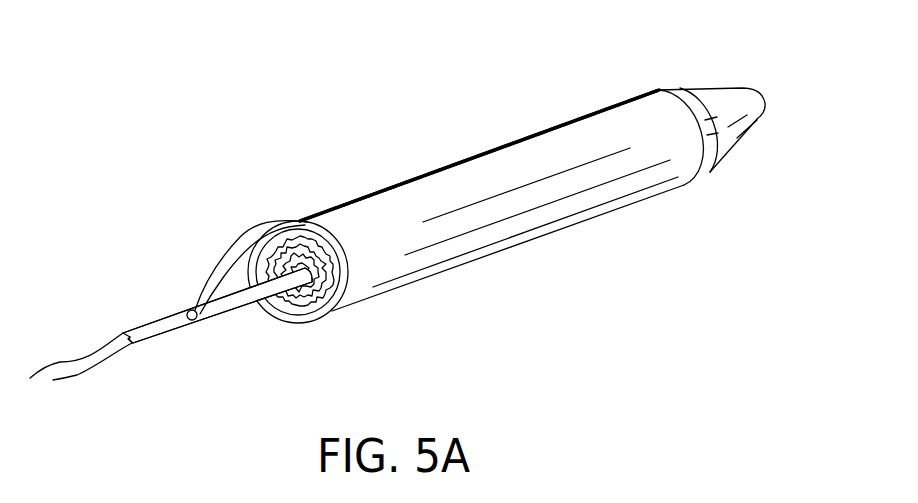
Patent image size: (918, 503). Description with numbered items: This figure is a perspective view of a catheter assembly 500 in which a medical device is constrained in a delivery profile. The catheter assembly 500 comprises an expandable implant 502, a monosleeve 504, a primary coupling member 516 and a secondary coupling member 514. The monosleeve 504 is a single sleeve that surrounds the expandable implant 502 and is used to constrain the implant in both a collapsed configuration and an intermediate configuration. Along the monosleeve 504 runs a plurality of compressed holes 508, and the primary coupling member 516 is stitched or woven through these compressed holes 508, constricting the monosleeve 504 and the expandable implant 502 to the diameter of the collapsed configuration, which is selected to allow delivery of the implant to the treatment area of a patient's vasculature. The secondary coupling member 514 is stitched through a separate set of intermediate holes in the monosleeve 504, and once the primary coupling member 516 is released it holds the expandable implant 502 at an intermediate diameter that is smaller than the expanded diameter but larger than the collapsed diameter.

The catheter assembly 500 is at (268, 80).
The expandable implant 502 is at (283, 313).
The monosleeve 504 is at (344, 286).
The compressed holes 508 is at (517, 140).
The secondary coupling member 514 is at (213, 319).
The primary coupling member 516 is at (307, 223).